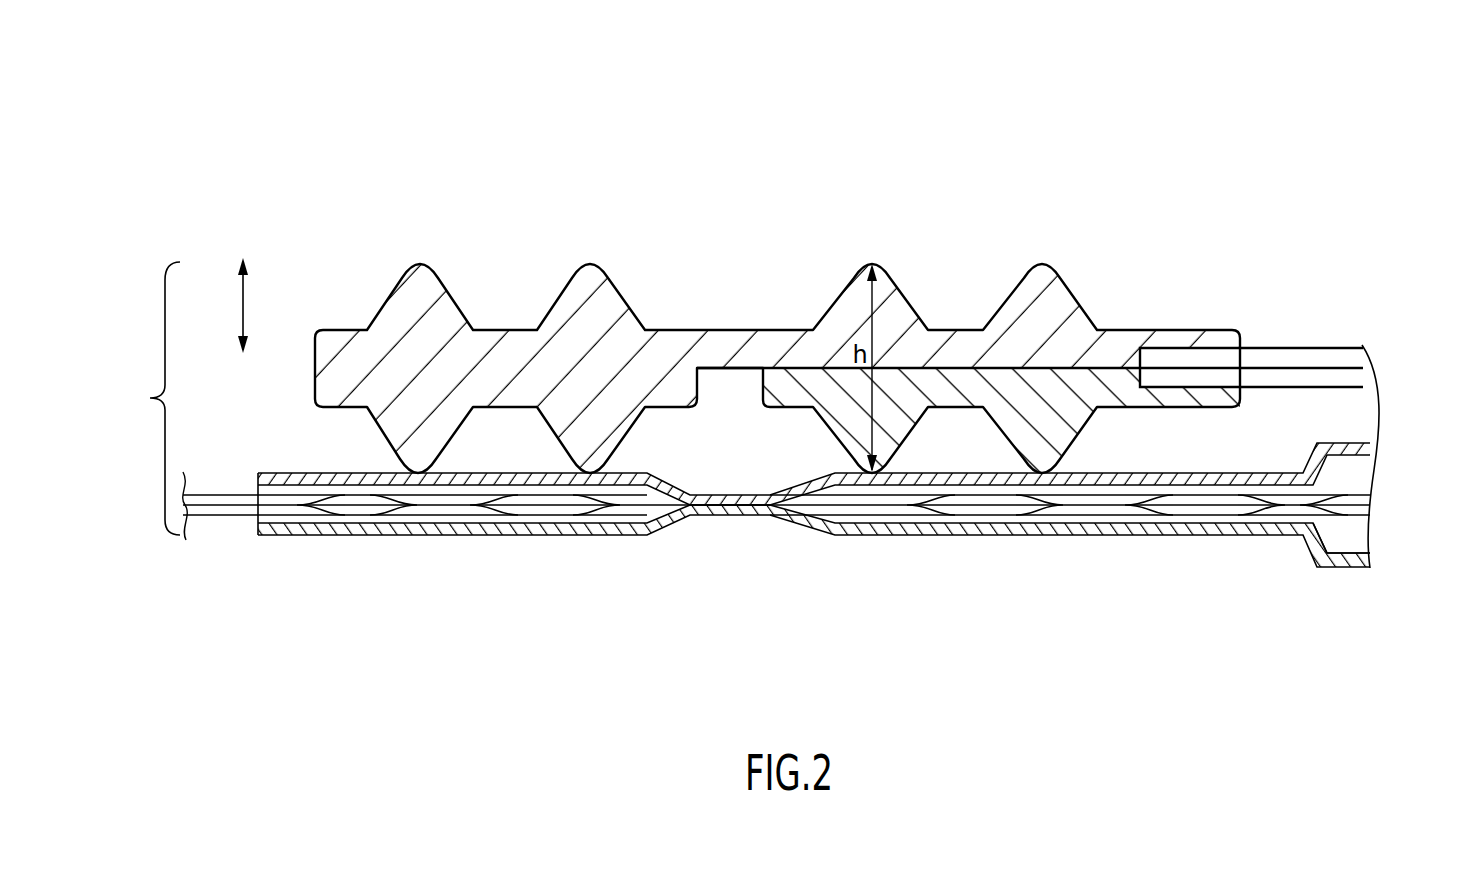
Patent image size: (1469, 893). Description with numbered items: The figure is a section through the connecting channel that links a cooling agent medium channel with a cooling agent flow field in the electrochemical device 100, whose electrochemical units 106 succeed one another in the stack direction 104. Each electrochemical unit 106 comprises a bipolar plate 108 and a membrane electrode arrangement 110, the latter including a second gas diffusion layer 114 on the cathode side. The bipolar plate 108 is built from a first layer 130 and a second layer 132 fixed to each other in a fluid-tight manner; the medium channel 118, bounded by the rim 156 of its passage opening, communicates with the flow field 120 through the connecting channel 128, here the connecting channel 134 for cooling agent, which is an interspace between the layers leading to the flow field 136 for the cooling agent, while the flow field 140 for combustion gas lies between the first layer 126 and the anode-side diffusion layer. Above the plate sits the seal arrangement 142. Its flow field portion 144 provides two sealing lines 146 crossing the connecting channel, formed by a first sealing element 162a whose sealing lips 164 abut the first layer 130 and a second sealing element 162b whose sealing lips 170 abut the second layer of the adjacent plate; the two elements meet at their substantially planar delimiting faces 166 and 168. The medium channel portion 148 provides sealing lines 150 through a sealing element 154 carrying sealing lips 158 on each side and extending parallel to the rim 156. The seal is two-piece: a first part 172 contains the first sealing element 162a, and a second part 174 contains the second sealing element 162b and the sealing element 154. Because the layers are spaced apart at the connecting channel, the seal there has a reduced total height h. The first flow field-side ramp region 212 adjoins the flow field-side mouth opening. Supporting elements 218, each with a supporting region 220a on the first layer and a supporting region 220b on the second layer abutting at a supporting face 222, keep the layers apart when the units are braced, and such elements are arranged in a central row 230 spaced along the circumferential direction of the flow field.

The electrochemical device 100 is at (1340, 590).
The stack direction 104 is at (243, 305).
The electrochemical unit 106 is at (1395, 655).
The bipolar plate 108 is at (1256, 550).
The membrane electrode arrangement 110 is at (1318, 335).
The second gas diffusion layer 114 is at (1287, 352).
The medium channel 118 is at (196, 562).
The flow field 120 is at (1345, 478).
The first layer 126 is at (1210, 478).
The connecting channel 128 is at (477, 530).
The first layer 130 is at (1123, 478).
The second layer 132 is at (1157, 530).
The connecting channel for cooling agent 134 is at (912, 525).
The flow field for the cooling agent 136 is at (1350, 537).
The flow field for combustion gas 140 is at (1345, 402).
The seal arrangement 142 is at (403, 250).
The flow field portion 144 is at (1088, 282).
The sealing lines 146 is at (872, 263).
The medium channel portion 148 is at (295, 633).
The sealing lines 150 is at (420, 262).
The sealing element 154 is at (588, 330).
The rim 156 is at (248, 472).
The sealing lips 158 is at (447, 260).
The first sealing element 162a is at (1030, 415).
The second sealing element 162b is at (1070, 345).
The sealing lips 164 is at (850, 465).
The delimiting face 166 is at (908, 362).
The delimiting face 168 is at (955, 377).
The sealing lips 170 is at (888, 290).
The first part 172 is at (1065, 460).
The second part 174 is at (780, 346).
The first flow field-side ramp region 212 is at (1325, 431).
The supporting element 218 is at (685, 545).
The supporting region 220a is at (705, 495).
The supporting region 220b is at (710, 512).
The supporting face 222 is at (750, 500).
The central row 230 is at (782, 545).